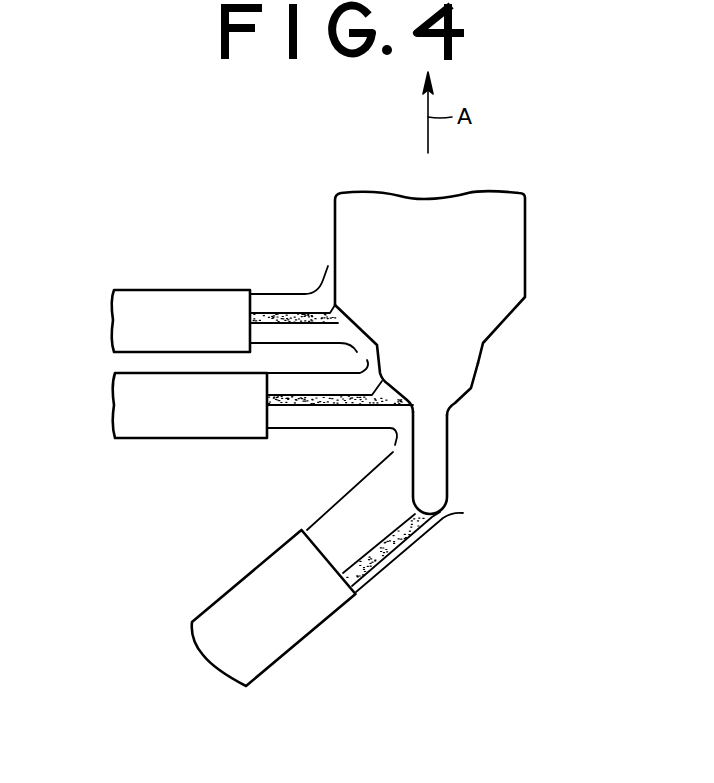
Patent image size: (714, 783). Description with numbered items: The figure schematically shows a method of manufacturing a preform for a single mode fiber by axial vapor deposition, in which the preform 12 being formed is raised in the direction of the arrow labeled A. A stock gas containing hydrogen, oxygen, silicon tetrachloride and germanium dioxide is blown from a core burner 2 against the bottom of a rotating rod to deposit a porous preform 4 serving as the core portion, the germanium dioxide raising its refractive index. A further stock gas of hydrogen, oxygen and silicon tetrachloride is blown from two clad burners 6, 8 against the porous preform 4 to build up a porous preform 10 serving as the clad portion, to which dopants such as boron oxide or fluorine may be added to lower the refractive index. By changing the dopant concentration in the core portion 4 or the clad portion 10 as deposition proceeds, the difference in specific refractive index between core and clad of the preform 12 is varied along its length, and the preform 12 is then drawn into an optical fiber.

The core burner 2 is at (296, 640).
The porous preform (core portion) 4 is at (449, 457).
The clad burner 6 is at (179, 444).
The clad burner 8 is at (187, 282).
The porous preform (clad portion) 10 is at (477, 363).
The preform 12 is at (530, 253).